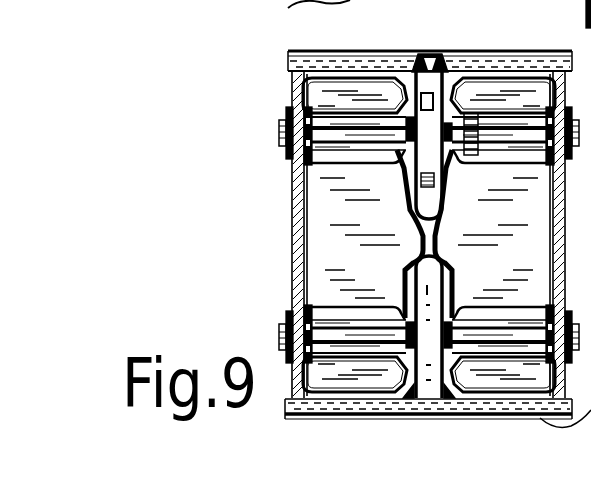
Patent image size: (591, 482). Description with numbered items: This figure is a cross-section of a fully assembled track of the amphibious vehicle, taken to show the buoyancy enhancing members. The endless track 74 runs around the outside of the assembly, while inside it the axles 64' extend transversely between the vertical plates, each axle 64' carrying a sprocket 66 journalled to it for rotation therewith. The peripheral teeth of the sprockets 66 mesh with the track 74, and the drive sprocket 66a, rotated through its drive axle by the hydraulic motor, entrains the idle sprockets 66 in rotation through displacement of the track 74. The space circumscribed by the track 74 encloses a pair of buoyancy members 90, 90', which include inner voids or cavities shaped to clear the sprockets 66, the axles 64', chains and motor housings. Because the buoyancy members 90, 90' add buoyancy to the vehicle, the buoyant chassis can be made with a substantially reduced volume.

The endless track 74 is at (500, 50).
The drive sprocket 66a is at (452, 50).
The sprocket 66 is at (452, 273).
The buoyancy member 90 is at (375, 200).
The buoyancy member 90' is at (479, 200).
The axle 64' is at (399, 233).